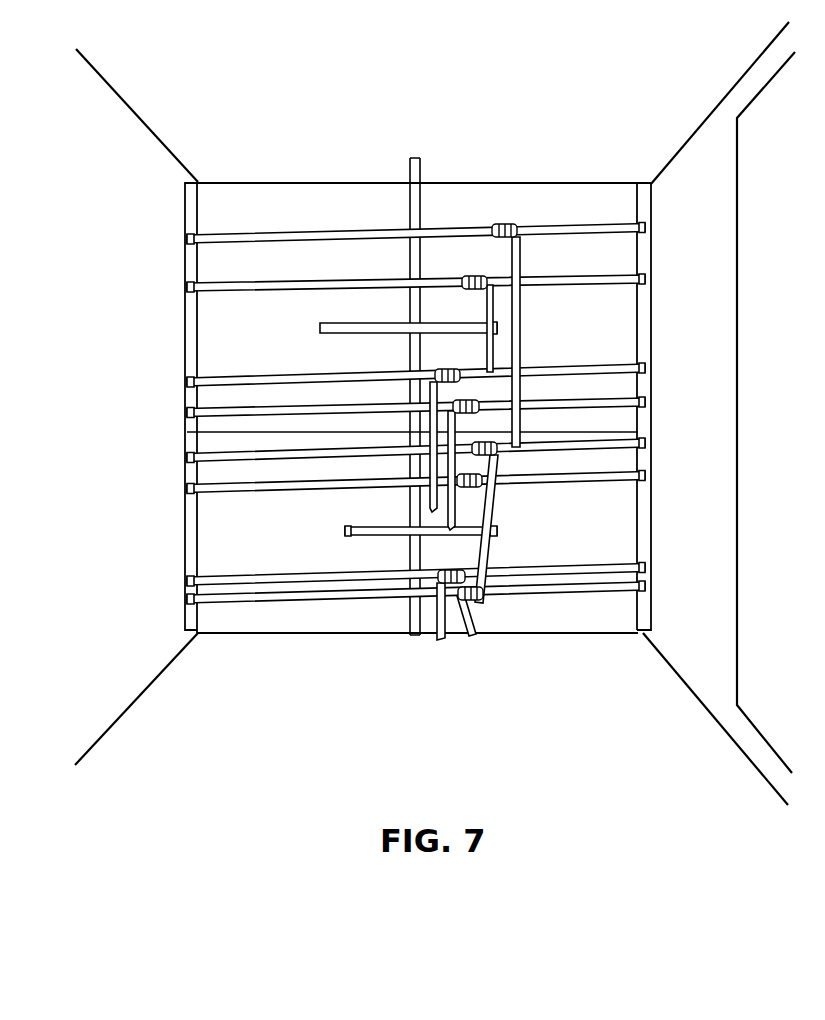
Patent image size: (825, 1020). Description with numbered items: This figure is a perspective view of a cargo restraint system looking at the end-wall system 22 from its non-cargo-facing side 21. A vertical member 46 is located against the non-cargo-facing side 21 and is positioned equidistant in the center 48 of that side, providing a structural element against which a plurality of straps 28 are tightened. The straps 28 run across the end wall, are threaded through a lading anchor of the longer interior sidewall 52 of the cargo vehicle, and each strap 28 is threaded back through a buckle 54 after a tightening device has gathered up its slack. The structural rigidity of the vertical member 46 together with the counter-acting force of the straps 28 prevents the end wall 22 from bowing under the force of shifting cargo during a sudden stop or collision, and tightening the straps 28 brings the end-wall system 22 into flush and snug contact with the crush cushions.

The non-cargo-facing side 21 is at (278, 329).
The end-wall system 22 is at (213, 357).
The straps 28 is at (610, 363).
The vertical member 46 is at (416, 158).
The center 48 is at (405, 226).
The longer interior sidewall 52 is at (698, 150).
The buckle 54 is at (508, 226).